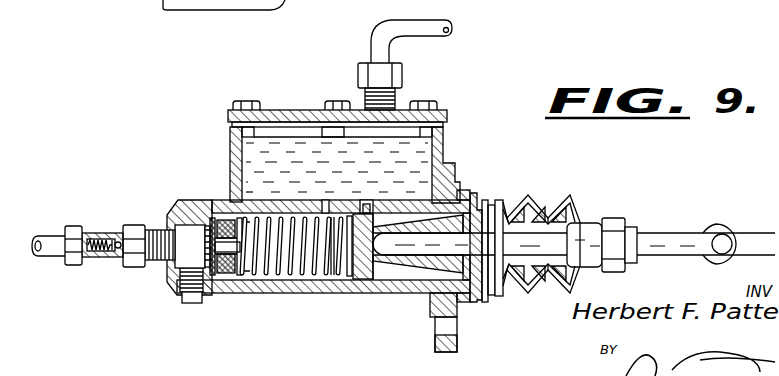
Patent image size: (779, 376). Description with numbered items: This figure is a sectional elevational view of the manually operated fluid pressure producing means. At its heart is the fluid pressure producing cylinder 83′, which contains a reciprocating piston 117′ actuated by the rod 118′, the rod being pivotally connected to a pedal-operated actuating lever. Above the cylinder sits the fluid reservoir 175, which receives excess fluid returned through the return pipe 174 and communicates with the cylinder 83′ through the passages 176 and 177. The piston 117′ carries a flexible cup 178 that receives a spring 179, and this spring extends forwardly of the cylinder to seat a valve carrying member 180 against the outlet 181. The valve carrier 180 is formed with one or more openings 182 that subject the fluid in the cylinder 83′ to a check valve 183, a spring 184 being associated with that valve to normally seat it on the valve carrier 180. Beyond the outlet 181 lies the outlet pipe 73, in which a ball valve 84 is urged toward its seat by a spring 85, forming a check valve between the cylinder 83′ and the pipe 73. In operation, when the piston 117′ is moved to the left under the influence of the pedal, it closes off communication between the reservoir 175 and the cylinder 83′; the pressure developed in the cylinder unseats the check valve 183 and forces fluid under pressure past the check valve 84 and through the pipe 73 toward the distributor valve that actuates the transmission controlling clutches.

The pipe 73 is at (62, 233).
The ball valve 84 is at (107, 234).
The spring 85 is at (100, 258).
The outlet 181 is at (199, 213).
The check valve 183 is at (204, 244).
The openings 182 is at (213, 272).
The valve carrying member 180 is at (226, 278).
The spring 184 is at (243, 282).
The spring 179 is at (282, 272).
The fluid pressure producing cylinder 83′ is at (345, 281).
The flexible cup 178 is at (346, 292).
The reciprocating piston 117′ is at (398, 273).
The passage 177 is at (326, 208).
The passage 176 is at (367, 205).
The fluid reservoir 175 is at (444, 151).
The rod 118′ is at (530, 240).
The return pipe 174 is at (383, 34).